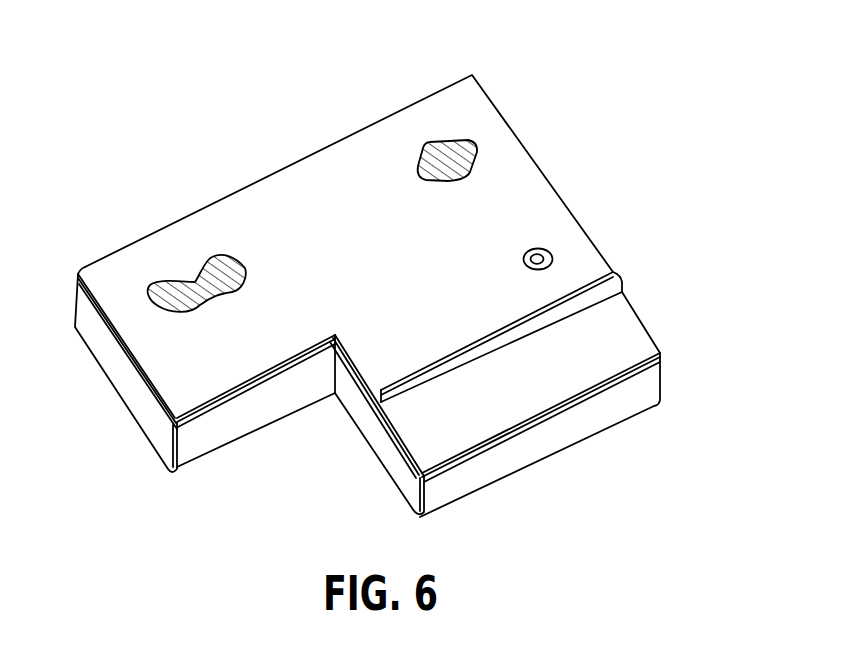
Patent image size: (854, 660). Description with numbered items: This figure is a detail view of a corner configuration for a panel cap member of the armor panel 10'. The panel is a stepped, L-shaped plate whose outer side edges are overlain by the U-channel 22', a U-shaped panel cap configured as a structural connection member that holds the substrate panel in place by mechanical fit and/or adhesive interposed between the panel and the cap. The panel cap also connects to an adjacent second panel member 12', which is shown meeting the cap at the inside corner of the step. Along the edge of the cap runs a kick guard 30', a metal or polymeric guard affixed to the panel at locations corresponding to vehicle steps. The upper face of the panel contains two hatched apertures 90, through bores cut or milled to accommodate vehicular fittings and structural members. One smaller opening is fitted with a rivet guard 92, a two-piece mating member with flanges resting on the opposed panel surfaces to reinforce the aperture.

The armor panel 10' is at (374, 274).
The second panel member 12' is at (300, 425).
The U-channel 22' is at (540, 404).
The kick guard 30' is at (527, 317).
The apertures 90 is at (203, 275).
The rivet guard 92 is at (546, 249).